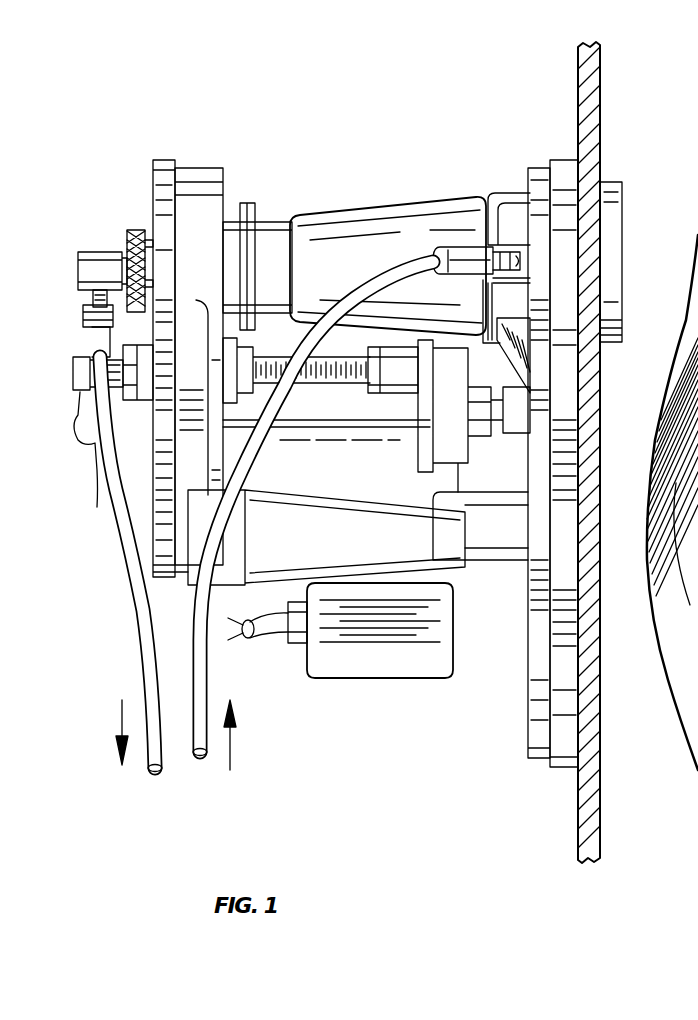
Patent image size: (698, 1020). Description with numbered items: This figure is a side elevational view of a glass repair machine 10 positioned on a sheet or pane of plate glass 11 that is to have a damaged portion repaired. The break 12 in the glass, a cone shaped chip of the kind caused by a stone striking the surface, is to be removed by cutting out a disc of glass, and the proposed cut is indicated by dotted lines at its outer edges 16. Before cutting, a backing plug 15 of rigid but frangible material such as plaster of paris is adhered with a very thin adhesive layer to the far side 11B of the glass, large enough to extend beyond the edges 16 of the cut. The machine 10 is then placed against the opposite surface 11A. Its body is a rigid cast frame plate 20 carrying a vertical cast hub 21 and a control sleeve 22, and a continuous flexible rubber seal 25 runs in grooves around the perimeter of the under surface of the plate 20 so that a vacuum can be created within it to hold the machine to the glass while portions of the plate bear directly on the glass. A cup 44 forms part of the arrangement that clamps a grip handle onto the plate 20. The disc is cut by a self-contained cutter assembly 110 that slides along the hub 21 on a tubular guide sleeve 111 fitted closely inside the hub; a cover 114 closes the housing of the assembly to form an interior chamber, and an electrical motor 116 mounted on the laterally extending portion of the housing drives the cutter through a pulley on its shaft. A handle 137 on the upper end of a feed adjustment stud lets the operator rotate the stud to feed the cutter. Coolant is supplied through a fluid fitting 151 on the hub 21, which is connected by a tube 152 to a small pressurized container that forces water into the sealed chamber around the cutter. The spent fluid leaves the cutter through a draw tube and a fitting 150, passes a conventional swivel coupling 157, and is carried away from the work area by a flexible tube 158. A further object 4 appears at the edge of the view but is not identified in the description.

The container 4 is at (672, 502).
The glass repair machine 10 is at (348, 683).
The pane of plate glass 11 is at (587, 733).
The glass surface 11A is at (578, 837).
The opposite glass side 11B is at (603, 810).
The break 12 is at (580, 262).
The backing plug 15 is at (617, 250).
The outer edges of the proposed cut 16 is at (592, 200).
The frame plate 20 is at (533, 728).
The vertical cast hub 21 is at (393, 210).
The control sleeve 22 is at (390, 393).
The flexible rubber seal 25 is at (565, 650).
The cup 44 is at (270, 520).
The cutter assembly 110 is at (205, 160).
The tubular guide sleeve 111 is at (273, 220).
The cover 114 is at (153, 176).
The electrical motor 116 is at (407, 683).
The handle 137 is at (130, 496).
The fitting 150 is at (127, 258).
The fluid fitting 151 is at (457, 250).
The tube 152 is at (203, 753).
The swivel coupling 157 is at (102, 240).
The flexible tube 158 is at (152, 748).